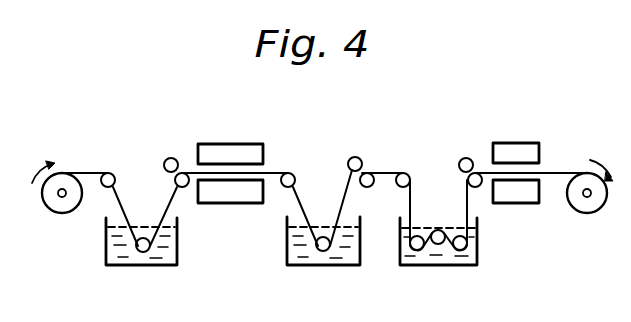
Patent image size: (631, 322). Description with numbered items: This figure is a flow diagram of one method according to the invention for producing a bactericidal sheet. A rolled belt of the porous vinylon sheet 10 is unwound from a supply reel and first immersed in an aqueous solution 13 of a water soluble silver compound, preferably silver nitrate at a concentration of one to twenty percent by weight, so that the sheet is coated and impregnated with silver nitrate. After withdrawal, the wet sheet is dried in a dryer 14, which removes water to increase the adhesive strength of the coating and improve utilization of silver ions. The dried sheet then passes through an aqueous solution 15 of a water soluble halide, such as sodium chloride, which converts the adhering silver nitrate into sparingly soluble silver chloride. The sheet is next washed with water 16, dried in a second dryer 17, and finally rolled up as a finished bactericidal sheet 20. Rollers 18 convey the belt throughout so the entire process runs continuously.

The porous vinylon sheet 10 is at (88, 172).
The aqueous solution of a water soluble silver compound 13 is at (125, 262).
The dryer 14 is at (220, 195).
The aqueous solution of a water soluble halide 15 is at (308, 258).
The water 16 is at (438, 257).
The second dryer 17 is at (522, 196).
The rollers 18 is at (165, 165).
The finished bactericidal sheet 20 is at (568, 172).